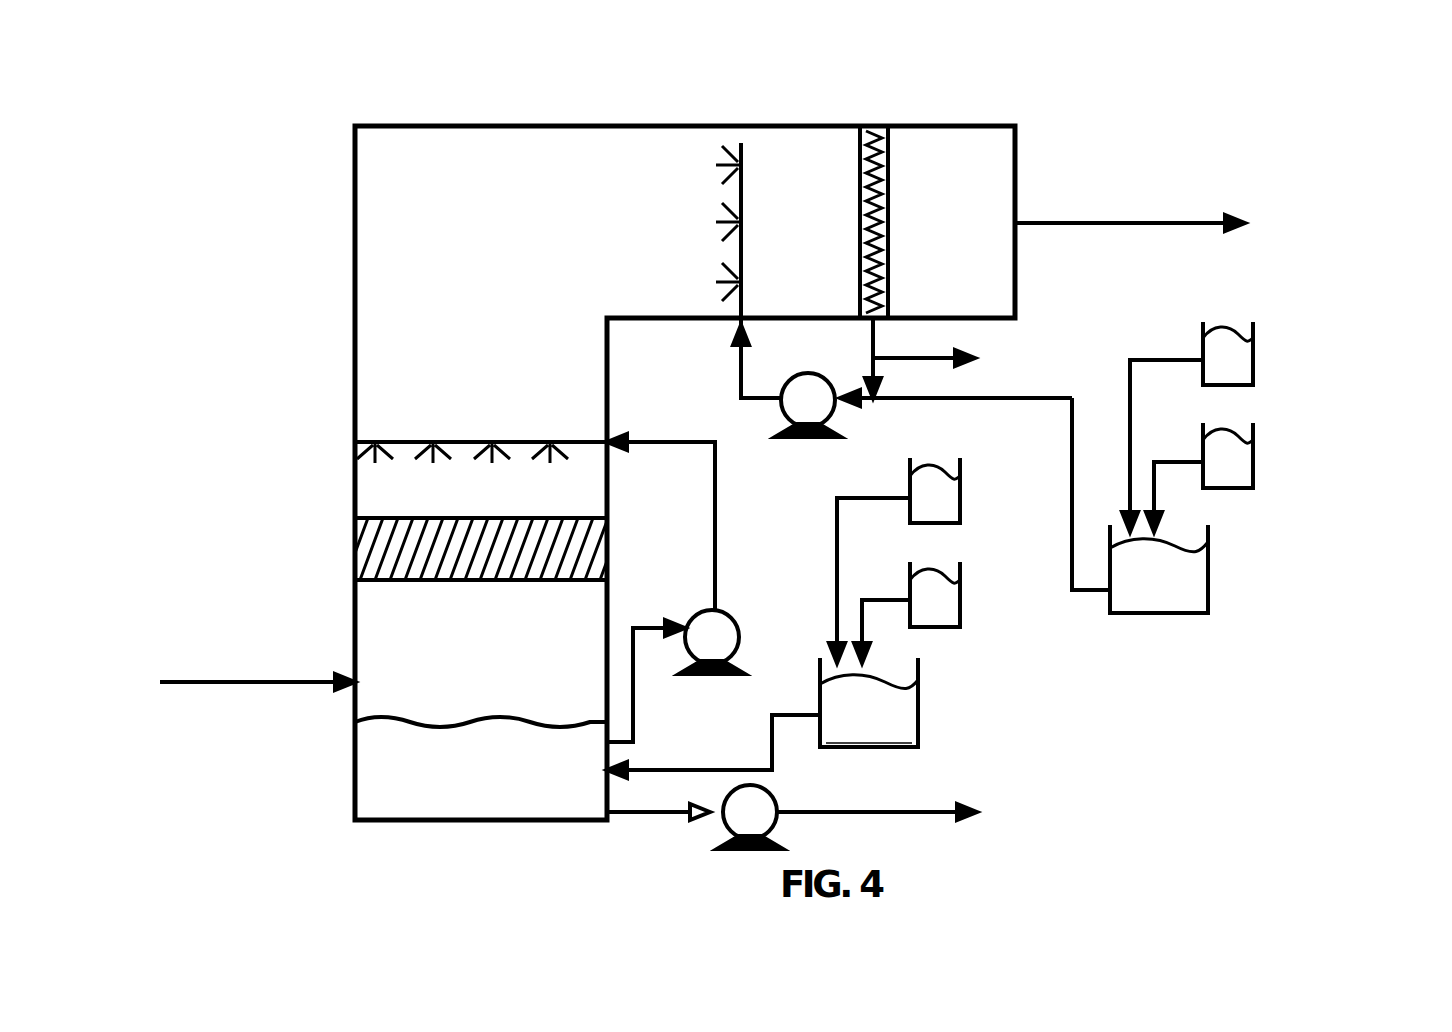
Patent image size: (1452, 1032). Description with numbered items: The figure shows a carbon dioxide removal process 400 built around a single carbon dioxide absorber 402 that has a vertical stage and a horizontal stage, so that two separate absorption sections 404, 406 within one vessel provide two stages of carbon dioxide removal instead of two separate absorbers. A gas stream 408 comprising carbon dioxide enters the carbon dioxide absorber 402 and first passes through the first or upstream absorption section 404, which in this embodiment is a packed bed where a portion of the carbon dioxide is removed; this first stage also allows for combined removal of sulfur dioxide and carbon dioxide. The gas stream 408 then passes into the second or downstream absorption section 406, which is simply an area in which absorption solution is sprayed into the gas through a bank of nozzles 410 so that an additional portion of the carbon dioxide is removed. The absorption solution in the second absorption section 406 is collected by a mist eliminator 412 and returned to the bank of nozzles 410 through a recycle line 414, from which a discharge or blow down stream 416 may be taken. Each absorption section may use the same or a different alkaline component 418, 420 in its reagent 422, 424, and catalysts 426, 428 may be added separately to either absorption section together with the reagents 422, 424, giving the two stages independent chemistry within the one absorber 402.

The process 400 is at (1228, 805).
The carbon dioxide absorber 402 is at (353, 345).
The first or upstream absorption section 404 is at (382, 578).
The second or downstream absorption section 406 is at (648, 232).
The gas stream 408 is at (218, 682).
The bank of nozzles 410 is at (745, 198).
The mist eliminator 412 is at (890, 210).
The recycle line 414 is at (742, 390).
The discharge or blow down stream 416 is at (915, 355).
The alkaline component 418 is at (937, 508).
The alkaline component 420 is at (1230, 375).
The reagent 422 is at (890, 735).
The reagent 424 is at (1175, 593).
The catalyst 426 is at (935, 610).
The catalyst 428 is at (1237, 475).